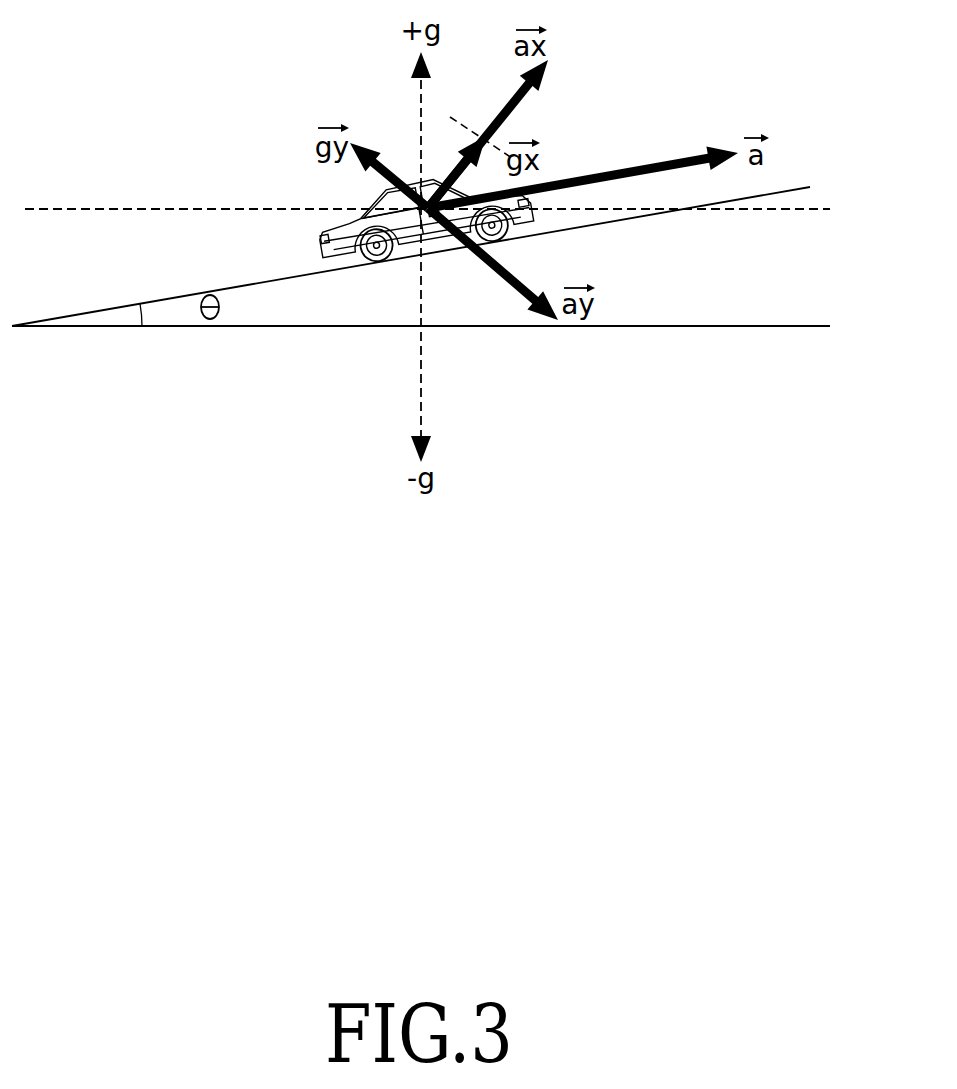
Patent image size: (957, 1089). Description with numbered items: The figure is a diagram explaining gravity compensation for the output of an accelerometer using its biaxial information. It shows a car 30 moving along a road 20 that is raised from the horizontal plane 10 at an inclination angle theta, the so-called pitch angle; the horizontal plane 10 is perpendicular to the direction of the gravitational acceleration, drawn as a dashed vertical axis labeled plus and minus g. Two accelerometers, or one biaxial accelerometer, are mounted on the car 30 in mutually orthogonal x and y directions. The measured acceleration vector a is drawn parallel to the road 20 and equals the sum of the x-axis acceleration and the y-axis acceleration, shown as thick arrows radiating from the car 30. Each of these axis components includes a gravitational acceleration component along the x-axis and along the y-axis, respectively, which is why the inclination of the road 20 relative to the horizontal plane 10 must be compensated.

The horizontal plane 10 is at (812, 327).
The road 20 is at (810, 188).
The car 30 is at (319, 236).